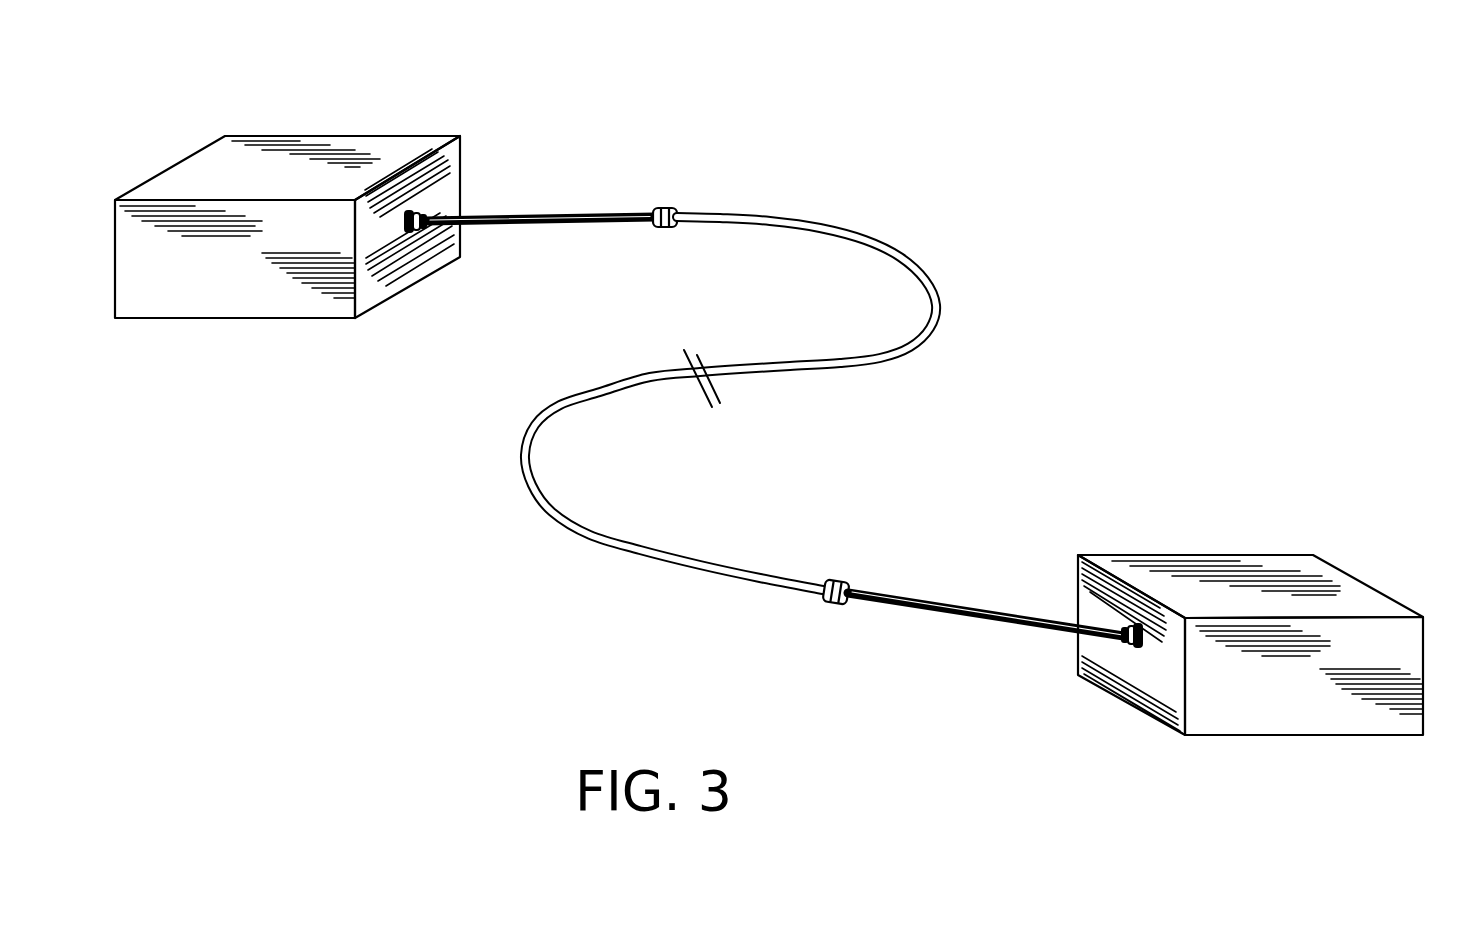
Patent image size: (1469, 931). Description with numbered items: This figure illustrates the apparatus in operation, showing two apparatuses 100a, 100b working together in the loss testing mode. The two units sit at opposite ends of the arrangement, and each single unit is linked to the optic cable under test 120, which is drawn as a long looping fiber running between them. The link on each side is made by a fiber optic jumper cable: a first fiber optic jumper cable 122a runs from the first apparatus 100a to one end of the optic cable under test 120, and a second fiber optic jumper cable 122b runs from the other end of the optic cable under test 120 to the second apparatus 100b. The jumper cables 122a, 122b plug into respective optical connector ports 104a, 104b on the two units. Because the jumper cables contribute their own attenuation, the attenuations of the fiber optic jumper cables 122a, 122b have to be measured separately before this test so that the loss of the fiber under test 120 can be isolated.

The apparatus 100a is at (422, 145).
The optical connector port 104a is at (421, 213).
The fiber optic jumper cable 122a is at (587, 215).
The optic cable under test 120 is at (938, 286).
The fiber optic jumper cable 122b is at (927, 597).
The optical connector port 104b is at (1132, 626).
The apparatus 100b is at (1305, 563).